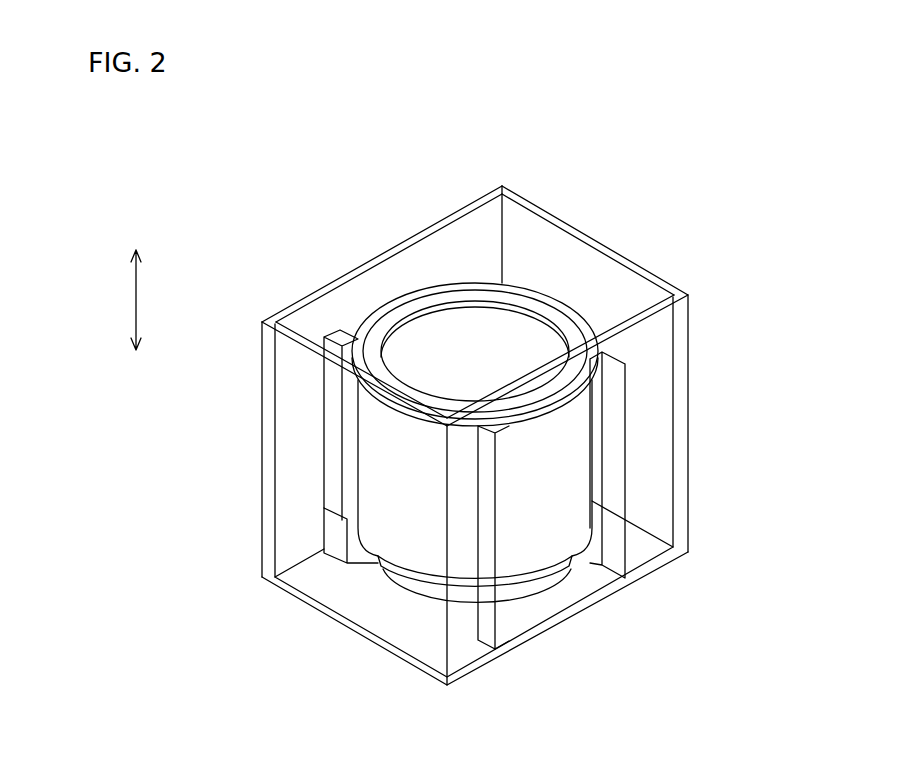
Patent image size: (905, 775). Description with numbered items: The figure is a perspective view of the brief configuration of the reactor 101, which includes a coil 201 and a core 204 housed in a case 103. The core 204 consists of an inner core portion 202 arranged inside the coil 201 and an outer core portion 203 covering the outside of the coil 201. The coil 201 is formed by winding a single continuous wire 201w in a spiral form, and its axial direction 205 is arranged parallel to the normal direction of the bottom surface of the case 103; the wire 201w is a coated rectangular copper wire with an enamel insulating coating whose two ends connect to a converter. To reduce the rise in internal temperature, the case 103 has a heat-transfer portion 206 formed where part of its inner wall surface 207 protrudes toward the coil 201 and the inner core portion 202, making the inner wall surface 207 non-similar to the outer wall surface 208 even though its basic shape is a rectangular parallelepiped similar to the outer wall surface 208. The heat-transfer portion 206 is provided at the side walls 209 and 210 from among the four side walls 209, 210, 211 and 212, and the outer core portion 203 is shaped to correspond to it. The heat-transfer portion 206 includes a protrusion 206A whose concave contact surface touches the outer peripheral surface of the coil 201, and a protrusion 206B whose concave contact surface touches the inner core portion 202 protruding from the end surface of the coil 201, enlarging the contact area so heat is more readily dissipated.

The reactor 101 is at (632, 179).
The case 103 is at (312, 293).
The coil 201 is at (378, 420).
The wire 201w is at (377, 337).
The inner core portion 202 is at (533, 347).
The outer core portion 203 is at (592, 278).
The core 204 is at (762, 200).
The axial direction 205 is at (133, 295).
The heat-transfer portion 206 is at (335, 467).
The protrusion 206A is at (335, 400).
The protrusion 206B is at (340, 550).
The inner wall surface 207 is at (297, 527).
The outer wall surface 208 is at (262, 453).
The side wall 209 is at (272, 517).
The side wall 210 is at (653, 487).
The side wall 211 is at (670, 371).
The side wall 212 is at (375, 627).